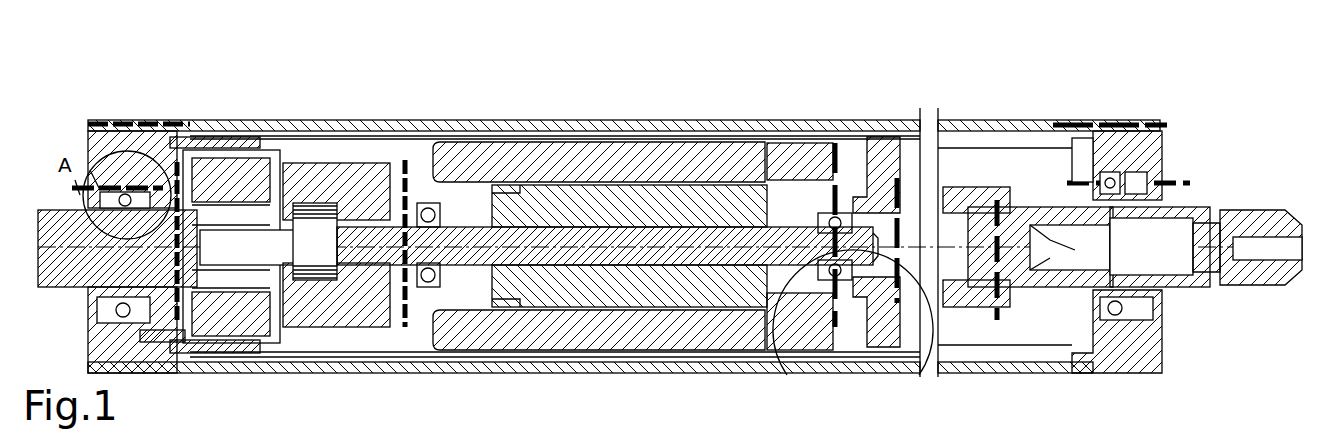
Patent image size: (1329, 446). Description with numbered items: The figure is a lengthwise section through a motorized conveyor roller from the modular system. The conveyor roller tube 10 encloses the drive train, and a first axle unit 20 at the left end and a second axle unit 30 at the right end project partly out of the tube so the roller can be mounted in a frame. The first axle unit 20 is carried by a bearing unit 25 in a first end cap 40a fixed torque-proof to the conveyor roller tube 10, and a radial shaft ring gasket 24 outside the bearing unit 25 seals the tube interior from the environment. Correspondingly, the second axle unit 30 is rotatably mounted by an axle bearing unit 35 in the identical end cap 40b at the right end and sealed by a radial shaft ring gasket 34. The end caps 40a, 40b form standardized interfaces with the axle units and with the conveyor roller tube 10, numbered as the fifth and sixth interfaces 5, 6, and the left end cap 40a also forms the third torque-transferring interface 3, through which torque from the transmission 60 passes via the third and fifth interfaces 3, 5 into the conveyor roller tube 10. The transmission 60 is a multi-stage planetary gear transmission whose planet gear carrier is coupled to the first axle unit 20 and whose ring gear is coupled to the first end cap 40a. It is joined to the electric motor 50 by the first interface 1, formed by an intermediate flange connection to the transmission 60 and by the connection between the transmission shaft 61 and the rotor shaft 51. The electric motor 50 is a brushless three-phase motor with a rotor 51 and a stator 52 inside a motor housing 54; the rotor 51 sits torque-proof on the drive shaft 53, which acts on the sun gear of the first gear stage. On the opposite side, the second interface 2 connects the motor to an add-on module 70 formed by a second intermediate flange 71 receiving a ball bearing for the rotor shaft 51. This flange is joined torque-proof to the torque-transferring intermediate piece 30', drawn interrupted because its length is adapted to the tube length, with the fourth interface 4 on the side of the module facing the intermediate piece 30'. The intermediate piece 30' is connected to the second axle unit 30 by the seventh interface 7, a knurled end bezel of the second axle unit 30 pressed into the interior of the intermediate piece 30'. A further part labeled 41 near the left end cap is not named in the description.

The first interface 1 is at (395, 312).
The second interface 2 is at (770, 247).
The third torque-transferring interface 3 is at (190, 275).
The fourth interface 4 is at (943, 177).
The fifth interface 5 is at (92, 120).
The sixth interface 6 is at (75, 180).
The seventh interface 7 is at (997, 190).
The conveyor roller tube 10 is at (550, 370).
The first axle unit 20 is at (57, 215).
The radial shaft ring gasket 24 is at (110, 185).
The bearing unit 25 is at (150, 175).
The second axle unit 30 is at (1206, 198).
The intermediate piece 30' is at (1035, 323).
The radial shaft ring gasket 34 is at (1140, 177).
The axle bearing unit 35 is at (1110, 177).
The first end cap 40a is at (140, 303).
The end cap 40b is at (1126, 346).
The bearing plate 41 is at (143, 343).
The electric motor 50 is at (478, 200).
The rotor 51 is at (610, 210).
The stator 52 is at (727, 167).
The drive shaft 53 is at (777, 243).
The motor housing 54 is at (441, 35).
The transmission 60 is at (275, 195).
The transmission shaft 61 is at (360, 247).
The add-on module 70 is at (887, 345).
The second intermediate flange 71 is at (837, 293).